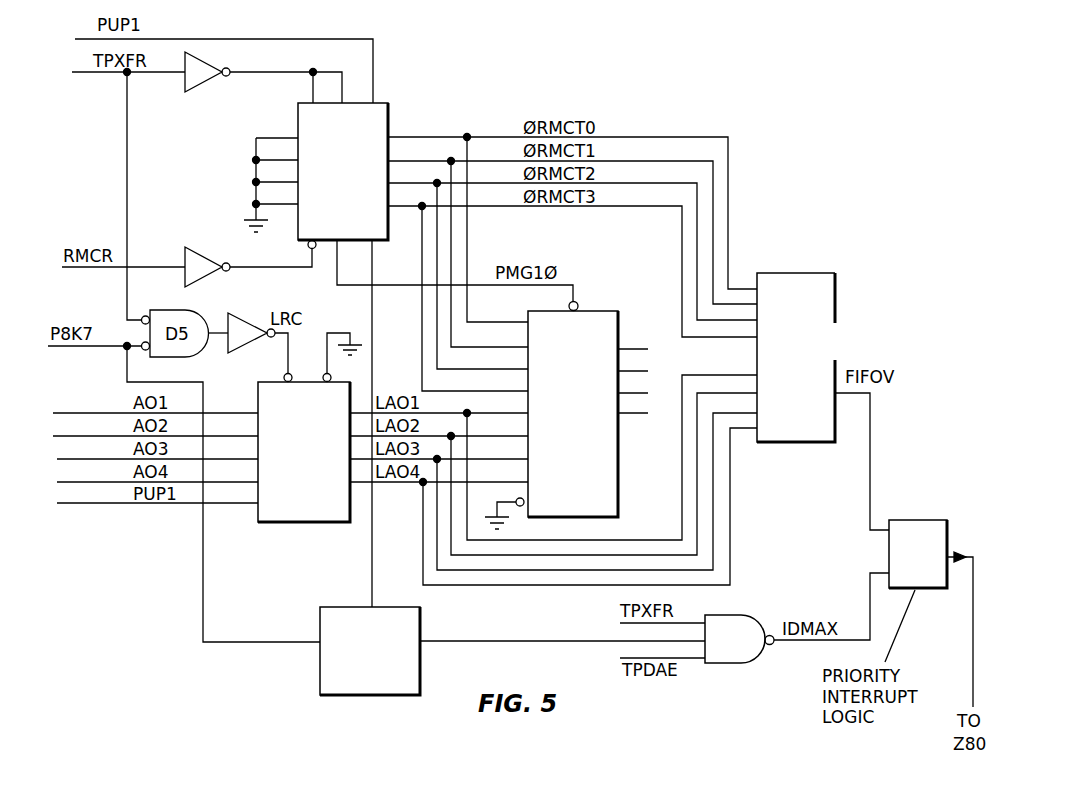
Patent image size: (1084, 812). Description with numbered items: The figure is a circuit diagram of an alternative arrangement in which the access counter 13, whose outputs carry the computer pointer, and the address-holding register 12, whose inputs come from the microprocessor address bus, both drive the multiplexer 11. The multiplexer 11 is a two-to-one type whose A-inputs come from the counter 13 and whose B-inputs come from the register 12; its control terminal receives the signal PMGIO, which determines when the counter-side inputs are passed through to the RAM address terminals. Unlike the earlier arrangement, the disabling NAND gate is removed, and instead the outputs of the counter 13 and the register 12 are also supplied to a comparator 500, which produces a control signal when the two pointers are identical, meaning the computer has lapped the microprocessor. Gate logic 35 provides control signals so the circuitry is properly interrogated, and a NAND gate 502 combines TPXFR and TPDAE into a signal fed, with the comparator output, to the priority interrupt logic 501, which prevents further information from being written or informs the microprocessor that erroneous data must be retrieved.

The multiplexer 11 is at (622, 488).
The address-holding register 12 is at (320, 516).
The access counter 13 is at (390, 108).
The gate logic 35 is at (319, 688).
The comparator 500 is at (807, 272).
The priority interrupt logic 501 is at (913, 528).
The NAND gate 502 is at (733, 652).